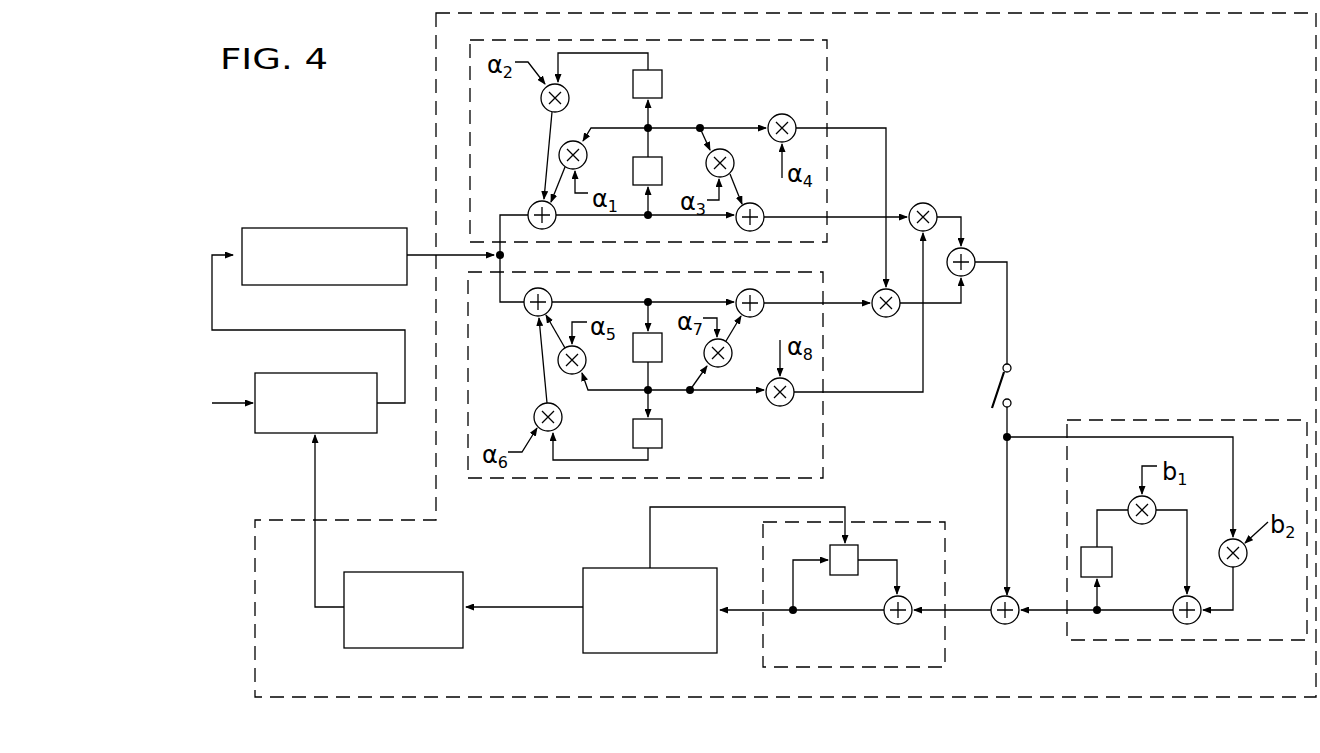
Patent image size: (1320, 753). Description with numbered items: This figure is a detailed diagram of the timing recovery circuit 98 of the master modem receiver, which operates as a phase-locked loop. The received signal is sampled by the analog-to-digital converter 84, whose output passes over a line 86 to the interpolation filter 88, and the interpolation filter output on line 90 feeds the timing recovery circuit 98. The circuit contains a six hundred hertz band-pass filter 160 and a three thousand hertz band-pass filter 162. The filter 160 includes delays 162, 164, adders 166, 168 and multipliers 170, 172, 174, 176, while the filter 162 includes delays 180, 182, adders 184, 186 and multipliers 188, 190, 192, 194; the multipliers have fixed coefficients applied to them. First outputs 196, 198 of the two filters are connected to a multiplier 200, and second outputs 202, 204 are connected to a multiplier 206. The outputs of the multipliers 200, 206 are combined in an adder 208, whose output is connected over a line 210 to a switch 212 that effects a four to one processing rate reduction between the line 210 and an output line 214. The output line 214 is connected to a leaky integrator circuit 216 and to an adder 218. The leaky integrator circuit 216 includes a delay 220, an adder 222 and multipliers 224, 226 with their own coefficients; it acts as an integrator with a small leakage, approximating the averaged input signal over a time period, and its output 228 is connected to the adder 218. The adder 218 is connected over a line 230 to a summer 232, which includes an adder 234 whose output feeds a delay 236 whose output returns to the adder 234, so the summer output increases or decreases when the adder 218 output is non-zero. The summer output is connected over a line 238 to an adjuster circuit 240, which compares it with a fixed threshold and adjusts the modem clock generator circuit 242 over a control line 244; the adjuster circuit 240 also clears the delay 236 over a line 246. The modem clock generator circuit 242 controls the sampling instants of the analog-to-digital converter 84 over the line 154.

The analog-to-digital converter 84 is at (322, 373).
The line 86 is at (275, 329).
The interpolation filter 88 is at (274, 228).
The line 90 is at (420, 253).
The timing recovery circuit 98 is at (436, 158).
The line 154 is at (317, 480).
The 600 Hz band-pass filter 160 is at (830, 87).
The 3000 Hz band-pass filter 162 is at (825, 452).
The delay 164 is at (662, 78).
The adder 166 is at (532, 203).
The adder 168 is at (760, 228).
The multiplier 170 is at (559, 152).
The multiplier 172 is at (541, 100).
The multiplier 174 is at (726, 149).
The multiplier 176 is at (776, 114).
The delay 180 is at (632, 348).
The delay 182 is at (662, 440).
The adder 184 is at (530, 311).
The adder 186 is at (763, 295).
The multiplier 188 is at (559, 362).
The multiplier 190 is at (535, 413).
The multiplier 192 is at (723, 367).
The multiplier 194 is at (776, 406).
The first output 196 is at (863, 216).
The first output 198 is at (900, 392).
The multiplier 200 is at (932, 204).
The second output 202 is at (886, 146).
The second output 204 is at (846, 303).
The multiplier 206 is at (891, 317).
The adder 208 is at (970, 252).
The line 210 is at (1008, 293).
The switch 212 is at (990, 382).
The output line 214 is at (1004, 429).
The leaky integrator circuit 216 is at (1170, 418).
The adder 218 is at (996, 598).
The delay 220 is at (1112, 562).
The adder 222 is at (1173, 601).
The multiplier 224 is at (1130, 500).
The multiplier 226 is at (1245, 565).
The output 228 is at (1045, 606).
The line 230 is at (988, 612).
The summer 232 is at (870, 522).
The adder 234 is at (883, 620).
The delay 236 is at (858, 553).
The line 238 is at (741, 607).
The adjuster circuit 240 is at (608, 568).
The modem clock generator circuit 242 is at (420, 572).
The control line 244 is at (548, 585).
The line 246 is at (650, 522).